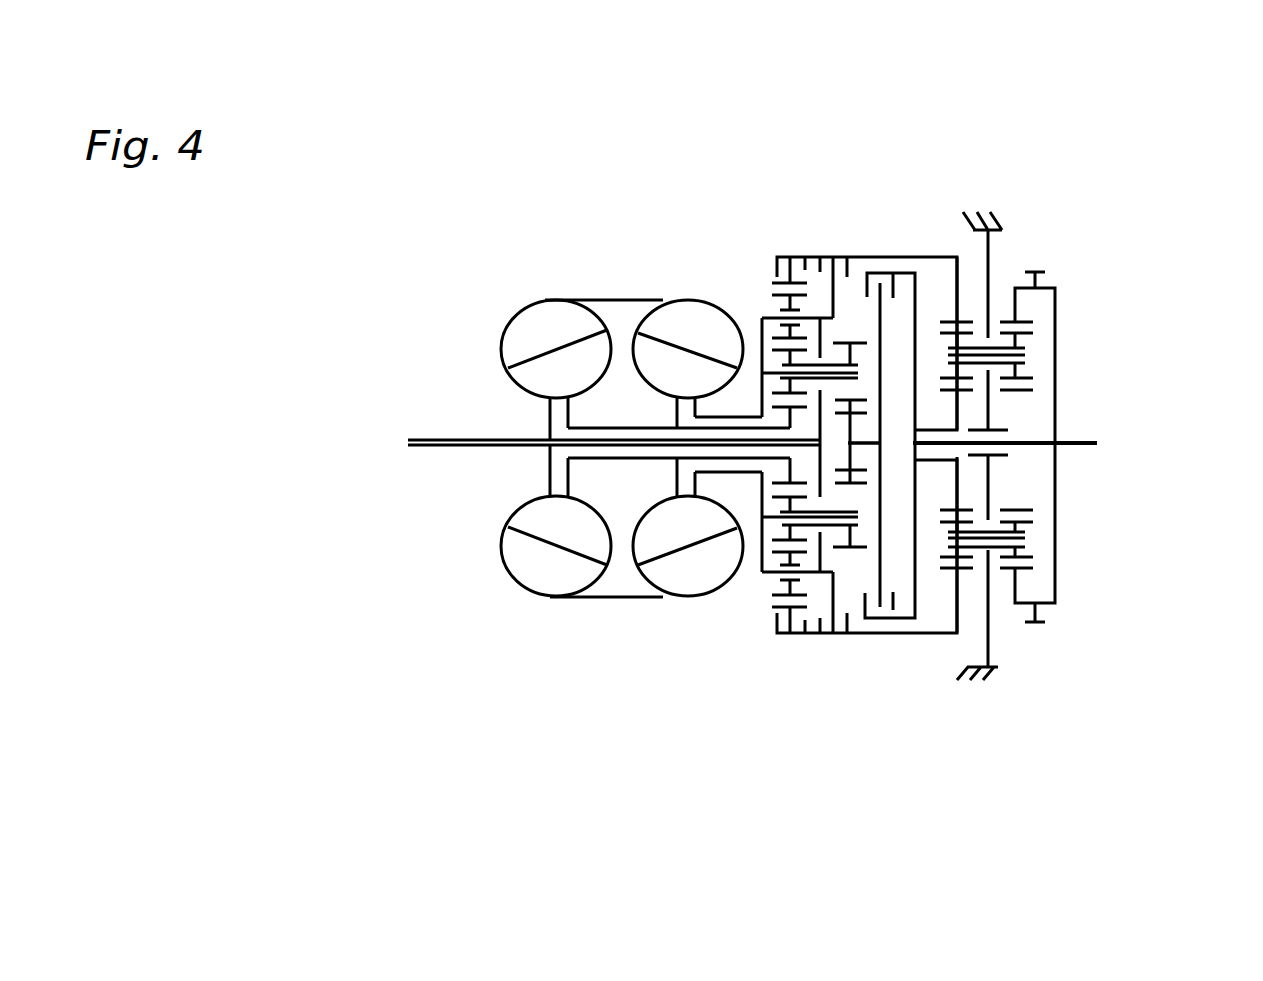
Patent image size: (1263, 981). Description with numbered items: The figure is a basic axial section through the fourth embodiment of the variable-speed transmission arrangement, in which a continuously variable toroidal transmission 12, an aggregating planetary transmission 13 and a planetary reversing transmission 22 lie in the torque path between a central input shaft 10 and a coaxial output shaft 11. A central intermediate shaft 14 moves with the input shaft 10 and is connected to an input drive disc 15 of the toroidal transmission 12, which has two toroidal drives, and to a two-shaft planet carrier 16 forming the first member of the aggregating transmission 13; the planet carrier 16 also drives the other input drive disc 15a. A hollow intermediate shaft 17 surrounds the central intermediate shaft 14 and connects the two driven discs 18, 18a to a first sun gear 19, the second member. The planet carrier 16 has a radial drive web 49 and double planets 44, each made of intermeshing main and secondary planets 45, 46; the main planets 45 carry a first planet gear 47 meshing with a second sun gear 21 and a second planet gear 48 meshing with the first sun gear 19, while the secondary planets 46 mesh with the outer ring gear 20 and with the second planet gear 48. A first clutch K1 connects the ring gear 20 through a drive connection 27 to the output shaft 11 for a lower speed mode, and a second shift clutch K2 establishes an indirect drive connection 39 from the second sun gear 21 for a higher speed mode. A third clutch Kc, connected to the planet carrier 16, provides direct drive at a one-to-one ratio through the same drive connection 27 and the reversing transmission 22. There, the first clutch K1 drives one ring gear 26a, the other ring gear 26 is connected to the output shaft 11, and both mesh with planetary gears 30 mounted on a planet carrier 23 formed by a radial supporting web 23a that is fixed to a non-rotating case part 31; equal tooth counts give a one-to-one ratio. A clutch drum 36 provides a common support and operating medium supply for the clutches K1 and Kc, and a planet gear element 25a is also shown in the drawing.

The input shaft 10 is at (457, 447).
The output shaft 11 is at (1090, 442).
The continuously variable toroidal transmission 12 is at (608, 193).
The aggregating planetary transmission 13 is at (830, 210).
The central intermediate shaft 14 is at (558, 440).
The input drive disc 15 is at (502, 308).
The other input drive disc 15a is at (815, 458).
The two-shaft planet carrier 16 is at (772, 312).
The hollow intermediate shaft 17 is at (615, 607).
The driven disc 18 is at (570, 298).
The driven disc 18a is at (627, 302).
The first sun gear 19 is at (770, 455).
The outer ring gear 20 is at (765, 302).
The second sun gear 21 is at (863, 417).
The planetary reversing transmission 22 is at (991, 210).
The planet carrier 23 is at (997, 260).
The radial supporting web 23a is at (988, 637).
The planet gear 25a is at (980, 498).
The ring gear 26 is at (1022, 322).
The ring gear 26a is at (967, 573).
The drive connection 27 is at (872, 640).
The planetary gears 30 is at (1025, 372).
The non-rotating case part 31 is at (992, 215).
The clutch drum 36 is at (812, 637).
The indirect drive connection 39 is at (930, 420).
The double planets 44 is at (762, 338).
The main planets 45 is at (862, 493).
The secondary planets 46 is at (770, 590).
The first planet gear 47 is at (855, 340).
The second planet gear 48 is at (772, 398).
The radial drive web 49 is at (633, 460).
The first clutch K1 is at (780, 643).
The third clutch Kc is at (833, 643).
The second shift clutch K2 is at (897, 643).